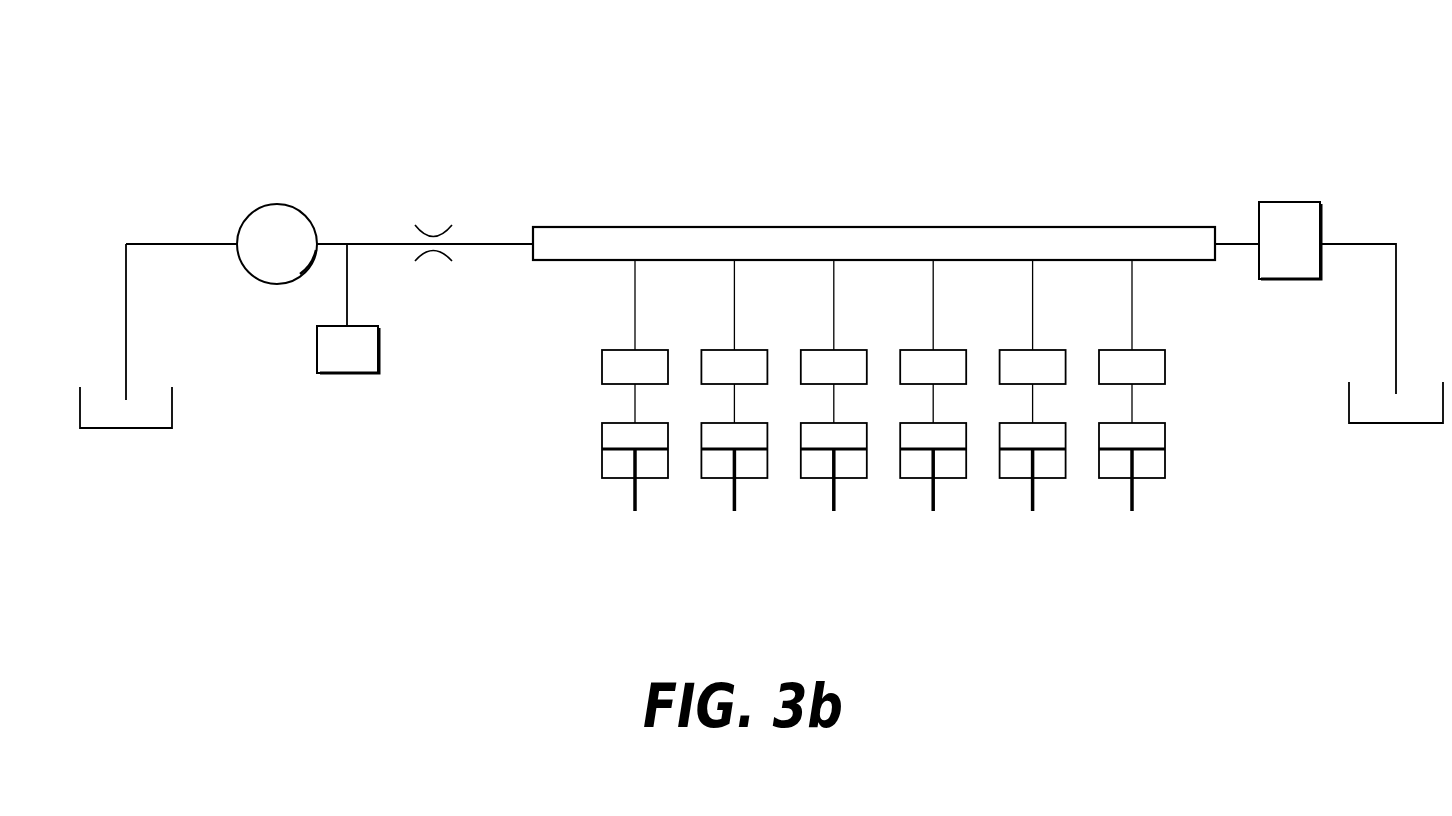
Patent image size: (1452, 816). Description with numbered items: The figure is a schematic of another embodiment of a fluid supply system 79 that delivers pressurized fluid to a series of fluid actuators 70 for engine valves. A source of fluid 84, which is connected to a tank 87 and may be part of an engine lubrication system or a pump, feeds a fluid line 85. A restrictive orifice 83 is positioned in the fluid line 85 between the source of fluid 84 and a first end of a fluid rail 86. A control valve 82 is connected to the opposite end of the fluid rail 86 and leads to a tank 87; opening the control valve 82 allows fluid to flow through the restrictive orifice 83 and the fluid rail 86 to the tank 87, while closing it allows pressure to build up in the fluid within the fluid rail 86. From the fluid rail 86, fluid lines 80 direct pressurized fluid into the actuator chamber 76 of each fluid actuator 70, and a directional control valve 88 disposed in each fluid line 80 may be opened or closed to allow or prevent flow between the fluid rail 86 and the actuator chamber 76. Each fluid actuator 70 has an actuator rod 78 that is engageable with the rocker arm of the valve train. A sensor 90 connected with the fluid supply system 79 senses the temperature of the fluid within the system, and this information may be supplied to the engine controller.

The fluid actuator 70 is at (560, 450).
The actuator chamber 76 is at (609, 436).
The actuator rod 78 is at (632, 497).
The fluid supply system 79 is at (636, 122).
The fluid line 80 is at (632, 405).
The control valve 82 is at (1287, 202).
The restrictive orifice 83 is at (433, 252).
The source of fluid 84 is at (272, 205).
The fluid line 85 is at (370, 243).
The fluid rail 86 is at (826, 227).
The tank 87 is at (126, 429).
The directional control valve 88 is at (606, 358).
The sensor 90 is at (349, 375).